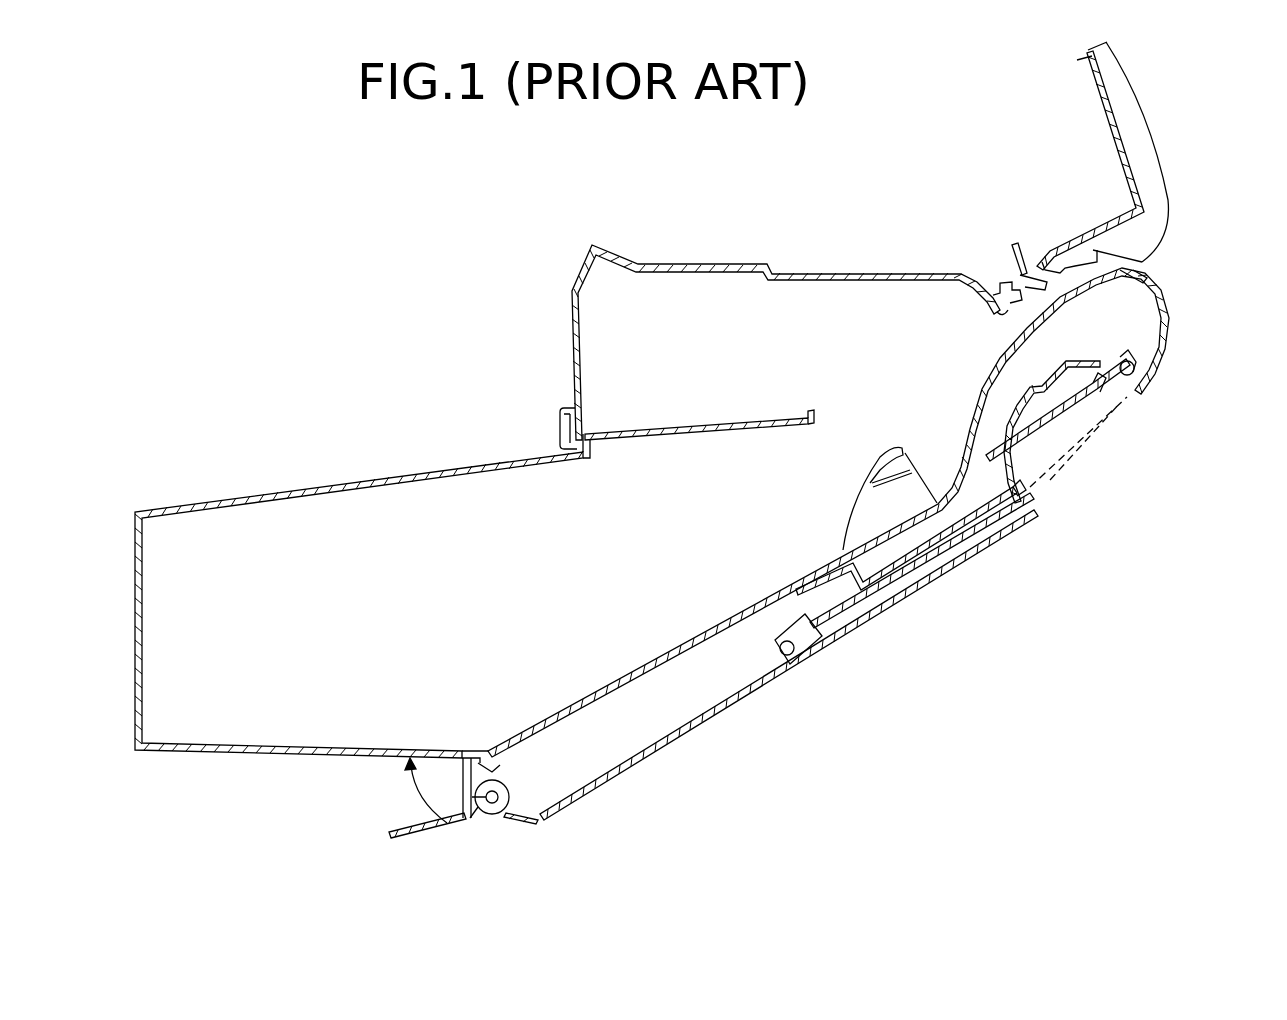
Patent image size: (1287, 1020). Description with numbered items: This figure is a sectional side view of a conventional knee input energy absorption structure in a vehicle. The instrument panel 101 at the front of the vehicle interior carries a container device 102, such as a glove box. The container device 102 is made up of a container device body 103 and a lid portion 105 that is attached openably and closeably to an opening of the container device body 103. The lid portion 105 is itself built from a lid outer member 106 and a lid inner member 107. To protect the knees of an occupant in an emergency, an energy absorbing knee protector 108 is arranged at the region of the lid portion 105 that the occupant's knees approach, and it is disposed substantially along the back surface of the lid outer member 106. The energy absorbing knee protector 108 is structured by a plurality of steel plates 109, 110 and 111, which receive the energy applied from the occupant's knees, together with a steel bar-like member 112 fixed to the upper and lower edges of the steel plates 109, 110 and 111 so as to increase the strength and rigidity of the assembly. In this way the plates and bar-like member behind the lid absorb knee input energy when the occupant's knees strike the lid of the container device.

The instrument panel 101 is at (1149, 109).
The container device 102 is at (496, 841).
The container device body 103 is at (447, 823).
The lid portion 105 is at (462, 885).
The lid outer member 106 is at (762, 686).
The lid inner member 107 is at (687, 648).
The energy absorbing knee protector 108 is at (962, 521).
The steel plate 109 is at (897, 565).
The steel plate 110 is at (953, 553).
The steel plate 111 is at (1013, 503).
The steel bar-like member 112 is at (1150, 490).